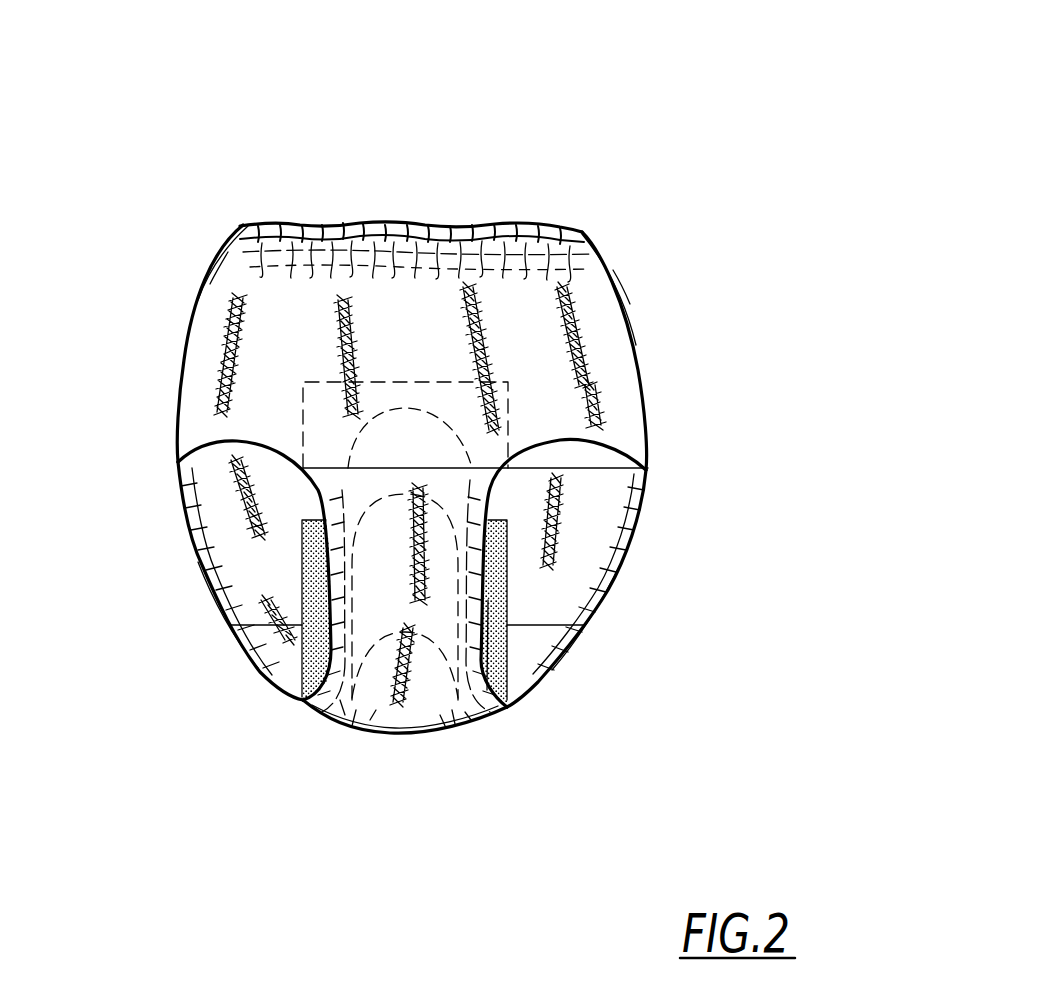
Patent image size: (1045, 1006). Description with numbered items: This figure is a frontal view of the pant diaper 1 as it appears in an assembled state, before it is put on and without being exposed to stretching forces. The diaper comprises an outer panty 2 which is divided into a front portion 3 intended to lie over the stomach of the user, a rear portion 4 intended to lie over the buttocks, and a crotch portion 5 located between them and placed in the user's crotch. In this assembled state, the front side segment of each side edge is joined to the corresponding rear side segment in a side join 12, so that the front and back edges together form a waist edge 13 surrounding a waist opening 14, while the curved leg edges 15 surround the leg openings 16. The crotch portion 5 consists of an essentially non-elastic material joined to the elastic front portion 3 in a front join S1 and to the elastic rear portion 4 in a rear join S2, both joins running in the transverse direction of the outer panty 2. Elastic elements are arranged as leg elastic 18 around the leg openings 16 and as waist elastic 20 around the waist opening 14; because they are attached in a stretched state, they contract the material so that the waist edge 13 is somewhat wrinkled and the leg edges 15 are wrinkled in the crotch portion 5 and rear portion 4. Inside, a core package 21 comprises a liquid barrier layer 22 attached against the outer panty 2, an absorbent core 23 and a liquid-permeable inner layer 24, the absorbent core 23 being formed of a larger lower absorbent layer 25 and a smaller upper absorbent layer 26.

The pant diaper 1 is at (622, 84).
The outer panty 2 is at (627, 383).
The front portion 3 is at (600, 330).
The rear portion 4 is at (583, 502).
The crotch portion 5 is at (400, 732).
The side join 12 is at (228, 252).
The waist edge 13 is at (519, 223).
The waist opening 14 is at (427, 223).
The leg edges 15 is at (208, 596).
The leg openings 16 is at (243, 542).
The leg elastic 18 is at (240, 638).
The waist elastic 20 is at (262, 268).
The core package 21 is at (300, 712).
The liquid barrier layer 22 is at (512, 648).
The absorbent core 23 is at (440, 733).
The liquid-permeable inner layer 24 is at (500, 633).
The lower absorbent layer 25 is at (367, 423).
The upper absorbent layer 26 is at (355, 460).
The front join S1 is at (427, 464).
The rear join S2 is at (528, 621).